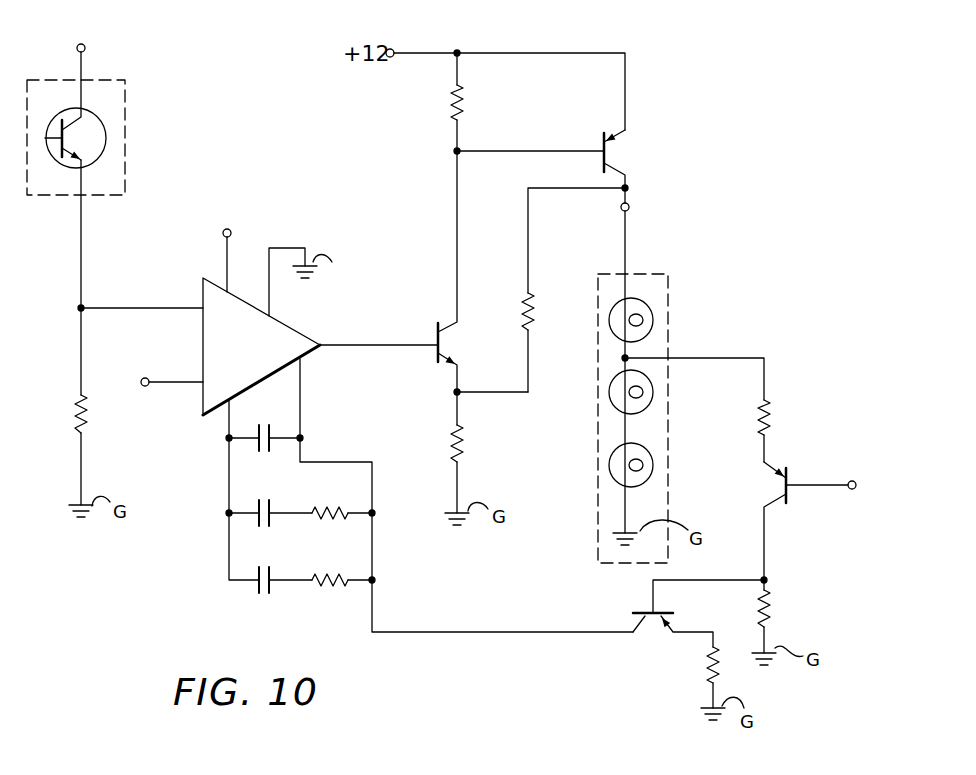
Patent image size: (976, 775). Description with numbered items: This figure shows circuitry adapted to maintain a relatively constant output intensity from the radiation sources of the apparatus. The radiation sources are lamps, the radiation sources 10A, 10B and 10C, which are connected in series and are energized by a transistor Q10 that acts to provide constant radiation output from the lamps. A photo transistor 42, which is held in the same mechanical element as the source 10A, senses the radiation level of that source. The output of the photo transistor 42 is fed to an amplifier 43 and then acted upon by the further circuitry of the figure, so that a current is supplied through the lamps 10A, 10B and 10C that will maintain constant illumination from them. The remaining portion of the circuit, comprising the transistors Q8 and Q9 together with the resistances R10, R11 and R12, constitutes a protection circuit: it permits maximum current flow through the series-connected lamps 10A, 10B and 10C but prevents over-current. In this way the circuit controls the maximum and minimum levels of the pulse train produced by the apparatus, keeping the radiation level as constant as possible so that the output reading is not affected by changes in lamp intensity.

The photo transistor 42 is at (125, 97).
The amplifier 43 is at (200, 394).
The radiation source 10A is at (650, 308).
The radiation source 10B is at (653, 390).
The radiation source 10C is at (654, 455).
The transistor Q10 is at (618, 153).
The transistor Q9 is at (782, 481).
The transistor Q8 is at (655, 616).
The resistance R12 is at (768, 412).
The resistance R11 is at (771, 612).
The resistance R10 is at (707, 664).